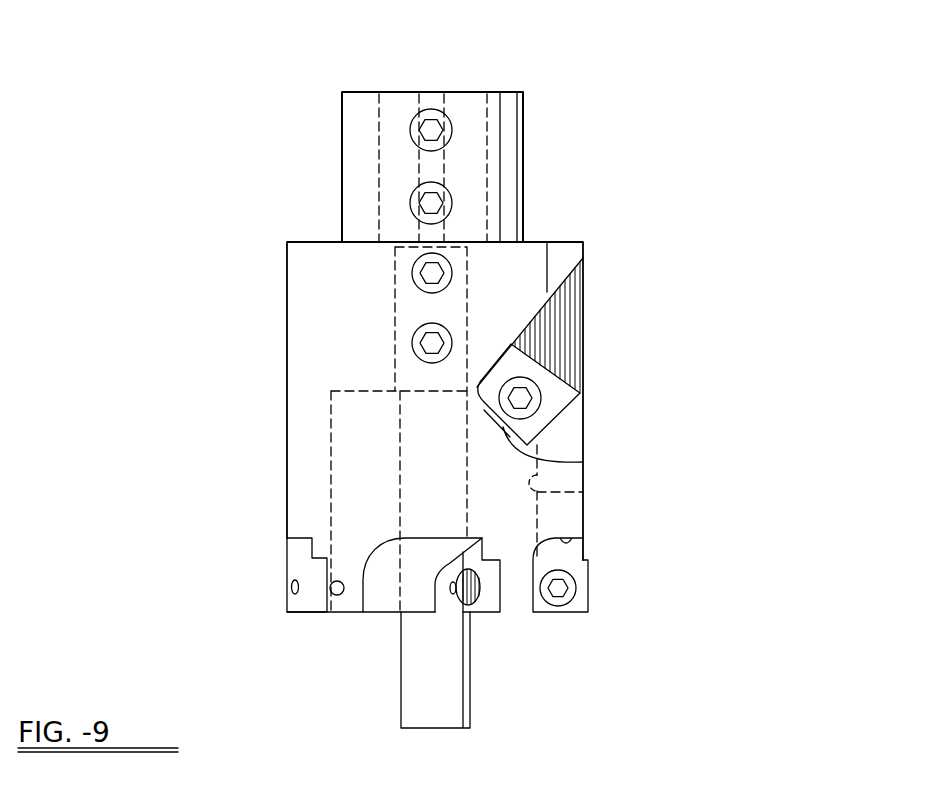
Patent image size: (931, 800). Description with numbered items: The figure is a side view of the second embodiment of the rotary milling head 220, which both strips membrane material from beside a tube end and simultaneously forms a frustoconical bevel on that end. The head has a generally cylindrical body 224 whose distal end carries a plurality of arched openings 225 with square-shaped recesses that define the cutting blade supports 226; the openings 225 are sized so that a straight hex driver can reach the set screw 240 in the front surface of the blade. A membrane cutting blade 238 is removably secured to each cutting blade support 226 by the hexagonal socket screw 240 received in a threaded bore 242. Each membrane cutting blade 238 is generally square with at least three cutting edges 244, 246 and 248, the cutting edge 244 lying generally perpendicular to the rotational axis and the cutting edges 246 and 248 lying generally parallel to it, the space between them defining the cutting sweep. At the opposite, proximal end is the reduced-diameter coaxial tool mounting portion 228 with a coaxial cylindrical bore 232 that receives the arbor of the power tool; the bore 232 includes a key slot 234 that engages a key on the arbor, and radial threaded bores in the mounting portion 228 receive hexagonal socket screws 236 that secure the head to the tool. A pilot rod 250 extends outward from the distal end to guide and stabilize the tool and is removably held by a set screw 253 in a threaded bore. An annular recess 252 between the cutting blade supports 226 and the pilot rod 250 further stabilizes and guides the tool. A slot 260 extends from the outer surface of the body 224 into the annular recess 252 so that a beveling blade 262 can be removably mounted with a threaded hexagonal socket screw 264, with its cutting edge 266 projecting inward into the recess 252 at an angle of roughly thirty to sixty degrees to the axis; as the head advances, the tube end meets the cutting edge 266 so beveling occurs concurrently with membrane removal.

The rotary milling head 220 is at (237, 180).
The cylindrical body 224 is at (280, 457).
The arched opening 225 is at (585, 527).
The cutting blade support 226 is at (287, 565).
The tool mounting portion 228 is at (333, 208).
The cylindrical bore 232 is at (381, 114).
The key slot 234 is at (440, 101).
The hexagonal socket screw 236 is at (450, 132).
The membrane cutting blade 238 is at (325, 612).
The hexagonal socket screw 240 is at (455, 576).
The threaded bore 242 is at (291, 588).
The cutting edge 244 is at (475, 617).
The cutting edge 246 is at (523, 620).
The cutting edge 248 is at (588, 598).
The pilot rod 250 is at (395, 307).
The annular recess 252 is at (560, 488).
The set screw 253 is at (412, 273).
The slot 260 is at (567, 320).
The beveling blade 262 is at (560, 382).
The hexagonal socket screw 264 is at (542, 410).
The cutting edge 266 is at (560, 463).